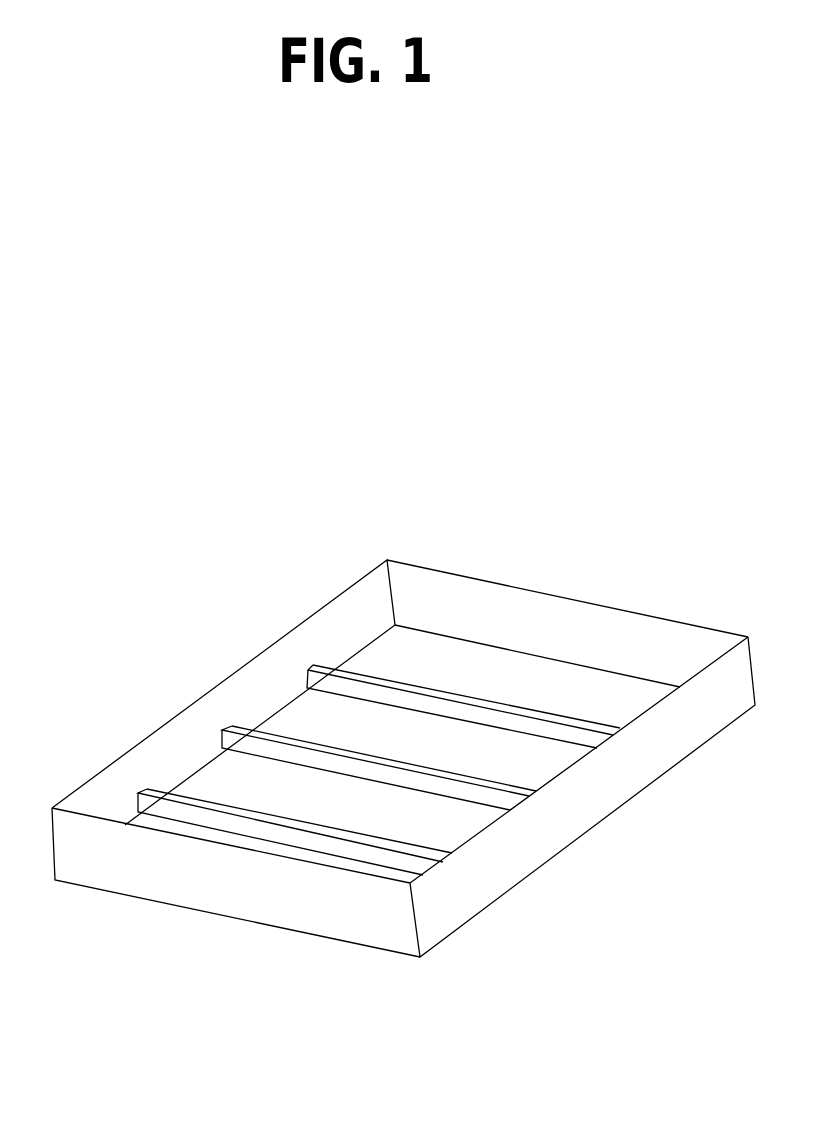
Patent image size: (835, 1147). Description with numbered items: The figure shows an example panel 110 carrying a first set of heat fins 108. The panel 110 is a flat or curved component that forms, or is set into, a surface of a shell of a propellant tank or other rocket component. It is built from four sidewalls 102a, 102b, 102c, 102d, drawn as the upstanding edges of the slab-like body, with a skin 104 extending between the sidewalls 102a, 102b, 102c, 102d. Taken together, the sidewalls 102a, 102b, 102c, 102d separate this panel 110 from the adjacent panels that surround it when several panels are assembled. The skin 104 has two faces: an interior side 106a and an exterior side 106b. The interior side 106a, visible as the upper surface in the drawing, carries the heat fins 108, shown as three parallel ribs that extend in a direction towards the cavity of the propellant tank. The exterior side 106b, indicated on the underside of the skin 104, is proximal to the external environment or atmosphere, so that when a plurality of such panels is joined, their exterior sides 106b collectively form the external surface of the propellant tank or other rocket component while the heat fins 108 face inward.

The sidewall 102a is at (693, 655).
The sidewall 102b is at (611, 782).
The sidewall 102c is at (340, 905).
The sidewall 102d is at (338, 623).
The skin 104 is at (515, 680).
The interior side 106a is at (417, 658).
The exterior side 106b is at (200, 957).
The heat fins 108 is at (193, 817).
The panel 110 is at (605, 640).